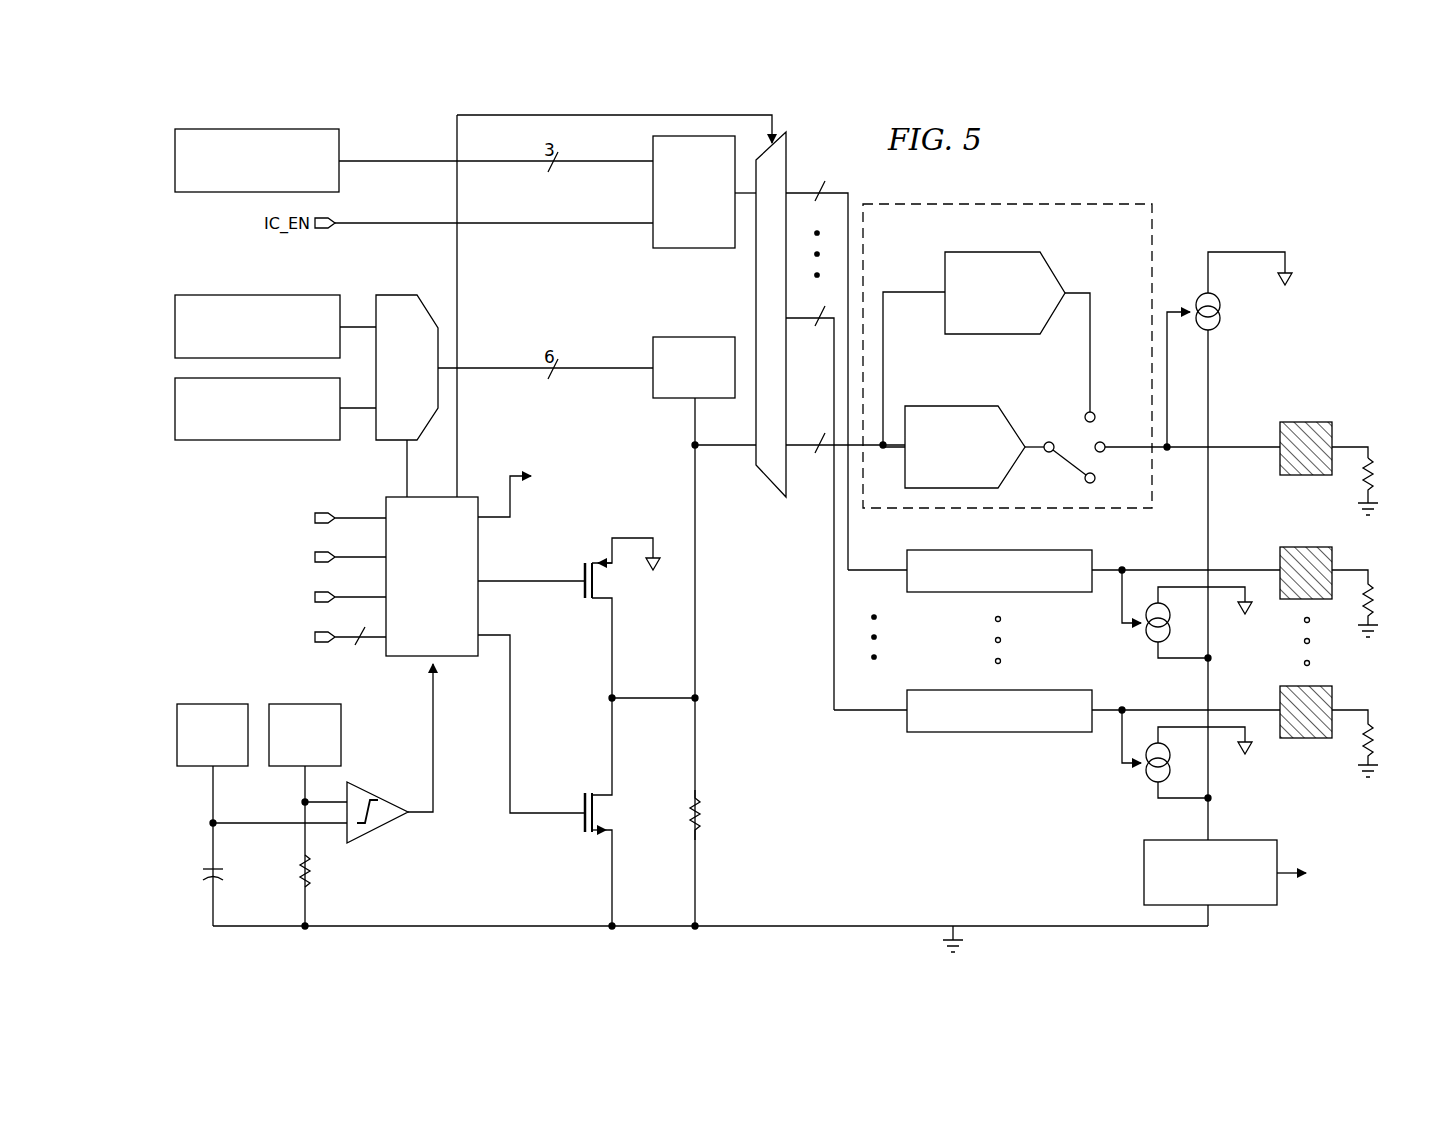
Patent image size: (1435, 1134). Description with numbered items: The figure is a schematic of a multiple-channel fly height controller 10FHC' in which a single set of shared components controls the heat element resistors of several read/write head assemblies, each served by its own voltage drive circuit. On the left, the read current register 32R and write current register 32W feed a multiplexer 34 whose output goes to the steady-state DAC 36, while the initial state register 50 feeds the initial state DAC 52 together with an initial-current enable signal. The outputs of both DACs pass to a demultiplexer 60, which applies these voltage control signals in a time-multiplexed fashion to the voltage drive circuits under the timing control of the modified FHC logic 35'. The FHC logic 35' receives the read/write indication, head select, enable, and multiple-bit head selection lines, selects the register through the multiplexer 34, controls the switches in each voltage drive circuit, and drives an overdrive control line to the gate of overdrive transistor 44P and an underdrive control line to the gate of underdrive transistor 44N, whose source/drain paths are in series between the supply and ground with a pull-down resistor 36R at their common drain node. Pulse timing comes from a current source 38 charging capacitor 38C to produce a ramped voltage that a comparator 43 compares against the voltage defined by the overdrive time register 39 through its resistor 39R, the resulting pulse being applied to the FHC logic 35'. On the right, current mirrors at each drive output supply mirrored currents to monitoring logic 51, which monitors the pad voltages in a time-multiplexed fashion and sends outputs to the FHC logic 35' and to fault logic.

The initial state register 50 is at (175, 152).
The read current register 32R is at (230, 295).
The write current register 32W is at (252, 440).
The multiplexer 34 is at (398, 295).
The initial state DAC 52 is at (686, 248).
The steady-state digital-to-analog converter 36 is at (710, 337).
The demultiplexer 60 is at (778, 486).
The FHC logic 35' is at (443, 633).
The overdrive transistor 44P is at (584, 590).
The underdrive transistor 44N is at (584, 824).
The pull-down resistor 36R is at (700, 810).
The current source 38 is at (177, 741).
The capacitor 38C is at (202, 874).
The overdrive time register 39 is at (341, 740).
The resistor 39R is at (302, 877).
The comparator 43 is at (377, 830).
The multiple-channel fly height controller 10FHC' is at (1273, 137).
The monitoring logic 51 is at (1240, 905).